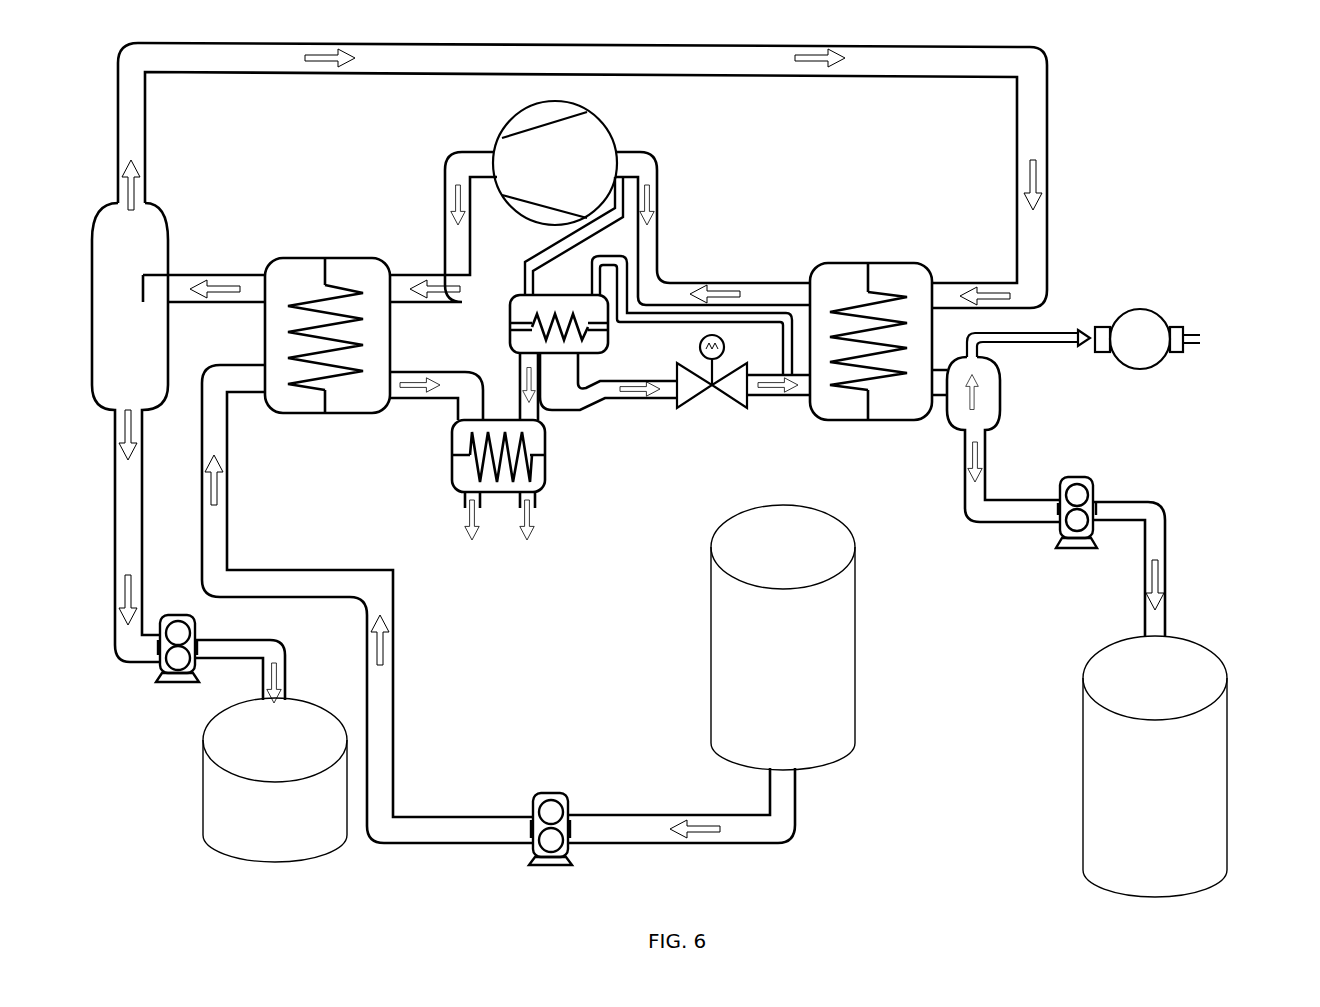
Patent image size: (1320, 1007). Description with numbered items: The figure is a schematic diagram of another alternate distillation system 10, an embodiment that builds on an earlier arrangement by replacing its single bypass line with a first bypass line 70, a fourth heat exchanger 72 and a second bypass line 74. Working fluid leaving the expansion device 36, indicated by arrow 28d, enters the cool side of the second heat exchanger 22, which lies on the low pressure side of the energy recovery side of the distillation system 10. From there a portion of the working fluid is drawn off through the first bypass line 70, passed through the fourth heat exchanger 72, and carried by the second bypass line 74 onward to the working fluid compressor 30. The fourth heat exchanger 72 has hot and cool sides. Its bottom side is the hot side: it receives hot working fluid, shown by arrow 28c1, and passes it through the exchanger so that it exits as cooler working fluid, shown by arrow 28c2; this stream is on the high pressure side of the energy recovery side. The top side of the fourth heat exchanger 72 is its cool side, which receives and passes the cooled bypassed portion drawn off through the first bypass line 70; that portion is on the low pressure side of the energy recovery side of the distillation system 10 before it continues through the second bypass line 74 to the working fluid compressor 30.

The distillation system 10 is at (1213, 68).
The second heat exchanger 22 is at (842, 262).
The working fluid compressor 30 is at (602, 123).
The expansion device 36 is at (696, 398).
The first bypass line 70 is at (660, 323).
The fourth heat exchanger 72 is at (510, 323).
The second bypass line 74 is at (544, 250).
The working fluid (hot, entering fourth heat exchanger) 28c1 is at (536, 396).
The working fluid (cooler, exiting fourth heat exchanger) 28c2 is at (627, 398).
The working fluid (after expansion device) 28d is at (790, 393).